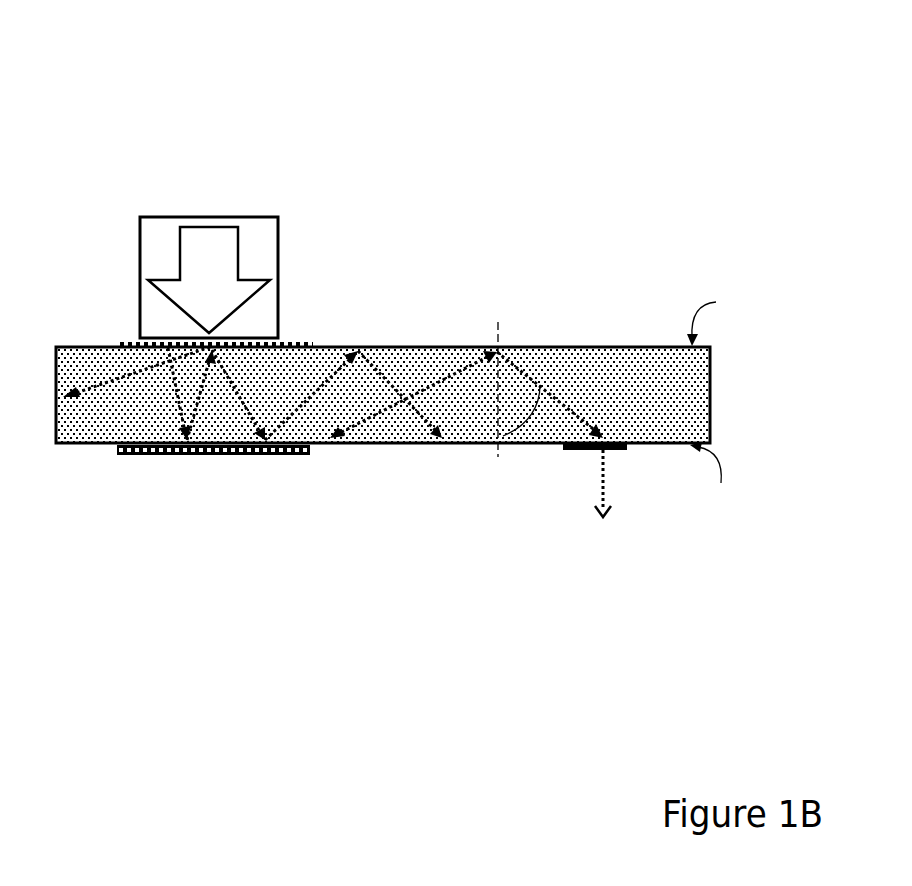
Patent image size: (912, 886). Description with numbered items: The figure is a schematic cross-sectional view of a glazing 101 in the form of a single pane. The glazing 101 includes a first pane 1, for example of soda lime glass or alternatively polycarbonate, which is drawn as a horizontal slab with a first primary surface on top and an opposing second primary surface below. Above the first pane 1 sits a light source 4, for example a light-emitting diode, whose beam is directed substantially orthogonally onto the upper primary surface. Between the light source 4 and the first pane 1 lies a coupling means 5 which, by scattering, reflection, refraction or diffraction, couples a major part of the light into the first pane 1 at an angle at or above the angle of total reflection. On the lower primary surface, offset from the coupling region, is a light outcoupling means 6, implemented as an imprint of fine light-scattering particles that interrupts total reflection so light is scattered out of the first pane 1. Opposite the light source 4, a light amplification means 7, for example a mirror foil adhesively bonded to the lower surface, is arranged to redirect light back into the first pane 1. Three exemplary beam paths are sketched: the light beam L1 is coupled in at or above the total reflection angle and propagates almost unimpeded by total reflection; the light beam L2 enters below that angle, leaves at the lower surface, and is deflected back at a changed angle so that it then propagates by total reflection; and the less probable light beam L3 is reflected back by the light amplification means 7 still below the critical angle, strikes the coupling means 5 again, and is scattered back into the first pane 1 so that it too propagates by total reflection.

The glazing 101 is at (98, 92).
The first pane 1 is at (624, 385).
The light source 4 is at (238, 217).
The coupling means 5 is at (253, 338).
The light outcoupling means 6 is at (613, 448).
The light amplification means 7 is at (147, 455).
The light beam L1 is at (93, 377).
The light beam L2 is at (333, 378).
The light beam L3 is at (447, 380).